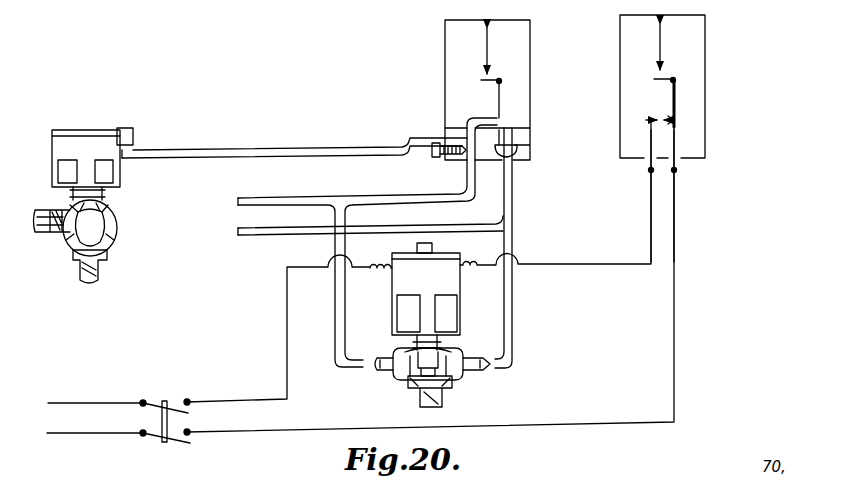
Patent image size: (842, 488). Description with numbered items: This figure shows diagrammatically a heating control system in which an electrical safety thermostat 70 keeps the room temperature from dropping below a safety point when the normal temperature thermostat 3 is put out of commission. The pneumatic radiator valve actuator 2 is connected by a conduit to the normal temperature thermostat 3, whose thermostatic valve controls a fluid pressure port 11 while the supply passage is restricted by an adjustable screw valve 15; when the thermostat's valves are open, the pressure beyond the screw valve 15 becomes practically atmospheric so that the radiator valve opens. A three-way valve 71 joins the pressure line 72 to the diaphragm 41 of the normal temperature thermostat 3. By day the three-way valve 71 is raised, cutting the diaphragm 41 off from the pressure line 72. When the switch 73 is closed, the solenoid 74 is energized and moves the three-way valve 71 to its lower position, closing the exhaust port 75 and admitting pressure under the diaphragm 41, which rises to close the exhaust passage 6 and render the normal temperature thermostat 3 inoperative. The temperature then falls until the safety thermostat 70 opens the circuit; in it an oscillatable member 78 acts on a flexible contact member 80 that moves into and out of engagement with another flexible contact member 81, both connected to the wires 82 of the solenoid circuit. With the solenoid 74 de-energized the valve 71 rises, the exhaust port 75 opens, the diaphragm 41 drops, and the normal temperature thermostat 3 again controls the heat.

The pneumatic radiator valve actuator 2 is at (118, 215).
The normal temperature thermostat 3 is at (533, 95).
The exhaust passage 6 is at (516, 144).
The fluid pressure port 11 is at (485, 118).
The adjustable screw valve 15 is at (432, 153).
The diaphragm 41 is at (513, 160).
The electrical safety thermostat 70 is at (706, 62).
The three-way valve 71 is at (415, 373).
The pressure line 72 is at (277, 200).
The switch 73 is at (192, 413).
The solenoid 74 is at (452, 278).
The exhaust port 75 is at (432, 395).
The oscillatable member 78 is at (663, 48).
The flexible contact member 80 is at (675, 138).
The flexible contact member 81 is at (648, 137).
The wires 82 is at (650, 206).